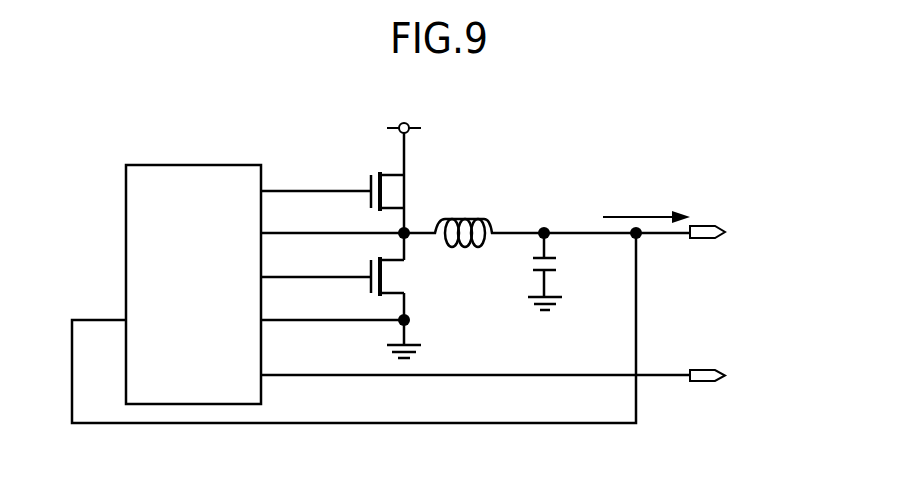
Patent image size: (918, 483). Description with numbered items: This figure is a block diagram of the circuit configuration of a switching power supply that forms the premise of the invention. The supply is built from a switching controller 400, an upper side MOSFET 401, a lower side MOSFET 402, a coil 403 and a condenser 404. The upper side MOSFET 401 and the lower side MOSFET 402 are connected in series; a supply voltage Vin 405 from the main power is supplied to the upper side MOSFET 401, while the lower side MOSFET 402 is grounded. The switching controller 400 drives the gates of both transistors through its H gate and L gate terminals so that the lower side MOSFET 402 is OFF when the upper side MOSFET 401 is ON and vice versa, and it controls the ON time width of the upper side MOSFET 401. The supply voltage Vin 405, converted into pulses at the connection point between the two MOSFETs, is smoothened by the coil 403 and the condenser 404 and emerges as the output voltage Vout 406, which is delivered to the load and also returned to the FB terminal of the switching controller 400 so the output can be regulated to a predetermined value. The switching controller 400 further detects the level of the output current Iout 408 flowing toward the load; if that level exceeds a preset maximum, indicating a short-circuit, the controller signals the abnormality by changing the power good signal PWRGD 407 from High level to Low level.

The switching controller 400 is at (126, 190).
The upper side MOSFET 401 is at (371, 182).
The lower side MOSFET 402 is at (371, 266).
The coil 403 is at (488, 221).
The condenser 404 is at (556, 264).
The supply voltage Vin 405 is at (405, 150).
The output voltage Vout 406 is at (668, 234).
The power good signal PWRGD 407 is at (668, 377).
The output current Iout 408 is at (616, 215).